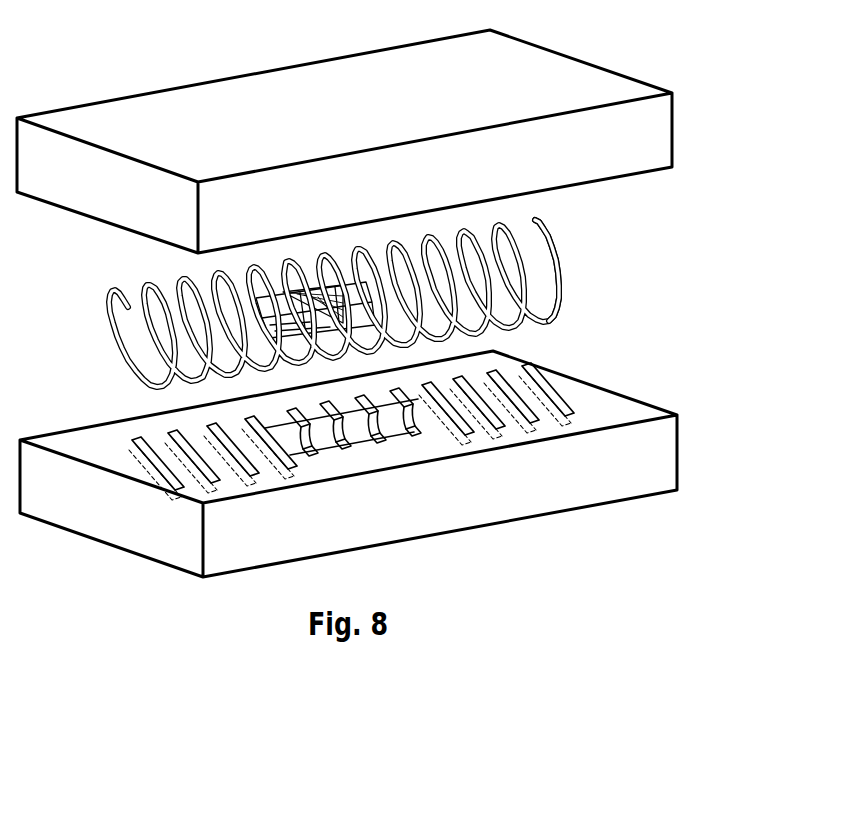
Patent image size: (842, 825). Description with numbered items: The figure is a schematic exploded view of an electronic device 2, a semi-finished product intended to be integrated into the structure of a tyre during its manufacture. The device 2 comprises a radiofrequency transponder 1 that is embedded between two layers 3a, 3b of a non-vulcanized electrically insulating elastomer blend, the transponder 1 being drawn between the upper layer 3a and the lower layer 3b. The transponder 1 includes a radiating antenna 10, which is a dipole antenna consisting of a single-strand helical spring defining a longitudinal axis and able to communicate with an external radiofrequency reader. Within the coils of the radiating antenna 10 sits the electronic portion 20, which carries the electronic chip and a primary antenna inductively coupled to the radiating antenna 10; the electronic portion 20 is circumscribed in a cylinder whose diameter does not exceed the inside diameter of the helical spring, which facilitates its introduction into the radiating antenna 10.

The radiofrequency transponder 1 is at (377, 301).
The electronic device 2 is at (360, 298).
The layer of non-vulcanized electrically insulating elastomer blend 3a is at (202, 140).
The layer of non-vulcanized electrically insulating elastomer blend 3b is at (568, 493).
The radiating antenna 10 is at (540, 233).
The electronic portion 20 is at (350, 341).